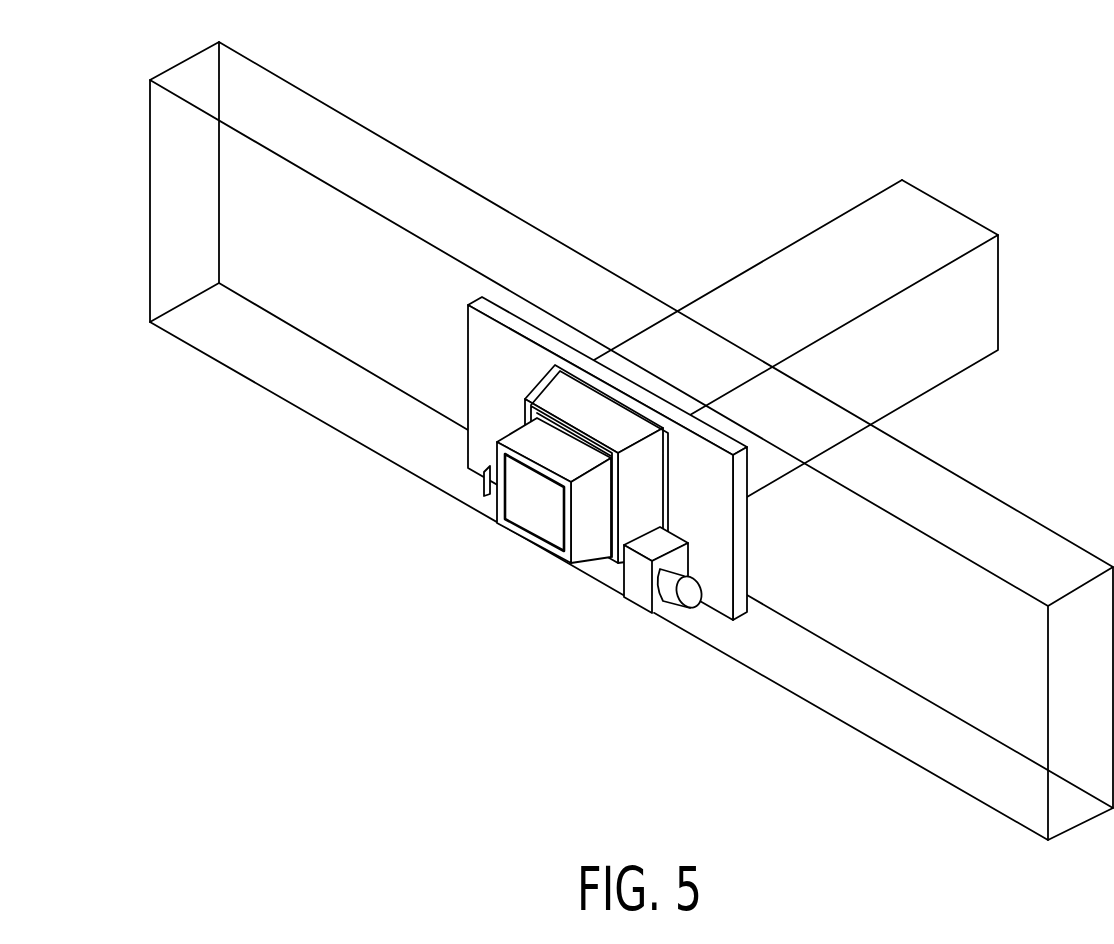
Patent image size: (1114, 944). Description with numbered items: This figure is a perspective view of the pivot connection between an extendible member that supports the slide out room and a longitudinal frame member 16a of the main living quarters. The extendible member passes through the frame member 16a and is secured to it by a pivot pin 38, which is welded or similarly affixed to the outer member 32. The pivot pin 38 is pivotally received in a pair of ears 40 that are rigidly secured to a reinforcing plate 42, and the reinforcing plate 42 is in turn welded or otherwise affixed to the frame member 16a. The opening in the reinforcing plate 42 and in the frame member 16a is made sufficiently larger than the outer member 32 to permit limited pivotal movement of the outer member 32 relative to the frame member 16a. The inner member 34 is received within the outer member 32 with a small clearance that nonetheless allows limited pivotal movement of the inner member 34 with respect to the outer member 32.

The frame member 16a is at (1017, 518).
The outer member 32 is at (819, 243).
The inner member 34 is at (580, 543).
The pivot pin 38 is at (683, 601).
The ears 40 is at (637, 592).
The reinforcing plate 42 is at (728, 555).